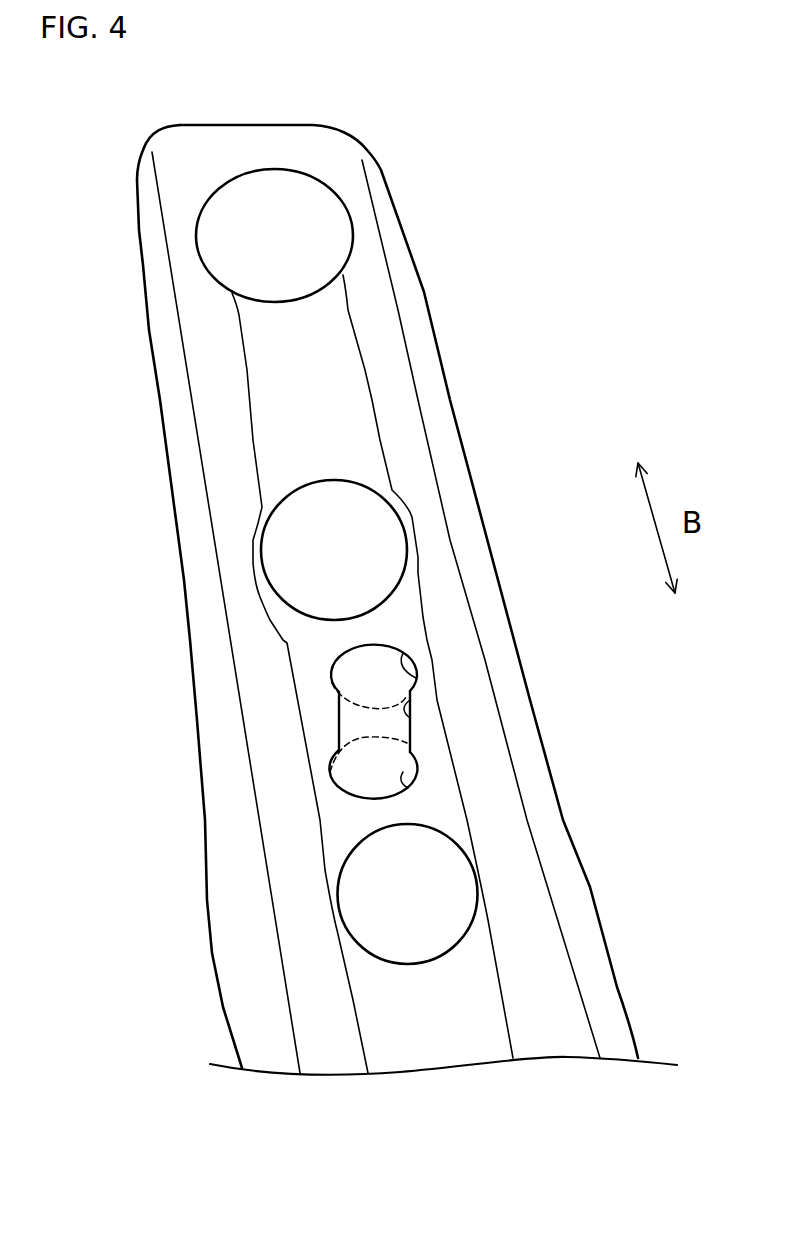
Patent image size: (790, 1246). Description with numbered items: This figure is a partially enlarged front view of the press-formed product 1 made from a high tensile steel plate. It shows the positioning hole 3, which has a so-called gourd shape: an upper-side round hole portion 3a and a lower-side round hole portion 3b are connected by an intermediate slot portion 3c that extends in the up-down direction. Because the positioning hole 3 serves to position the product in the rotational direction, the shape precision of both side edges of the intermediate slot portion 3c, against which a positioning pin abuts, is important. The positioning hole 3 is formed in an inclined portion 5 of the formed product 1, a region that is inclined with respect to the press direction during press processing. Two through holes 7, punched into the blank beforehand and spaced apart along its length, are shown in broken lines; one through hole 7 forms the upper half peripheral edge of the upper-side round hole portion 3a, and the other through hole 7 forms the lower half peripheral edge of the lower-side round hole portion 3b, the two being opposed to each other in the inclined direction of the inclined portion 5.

The formed product 1 is at (151, 353).
The positioning hole 3 is at (377, 715).
The upper-side round hole portion 3a is at (404, 656).
The lower-side round hole portion 3b is at (404, 787).
The intermediate slot portion 3c is at (411, 699).
The inclined portion 5 is at (307, 632).
The through hole 7 is at (330, 682).